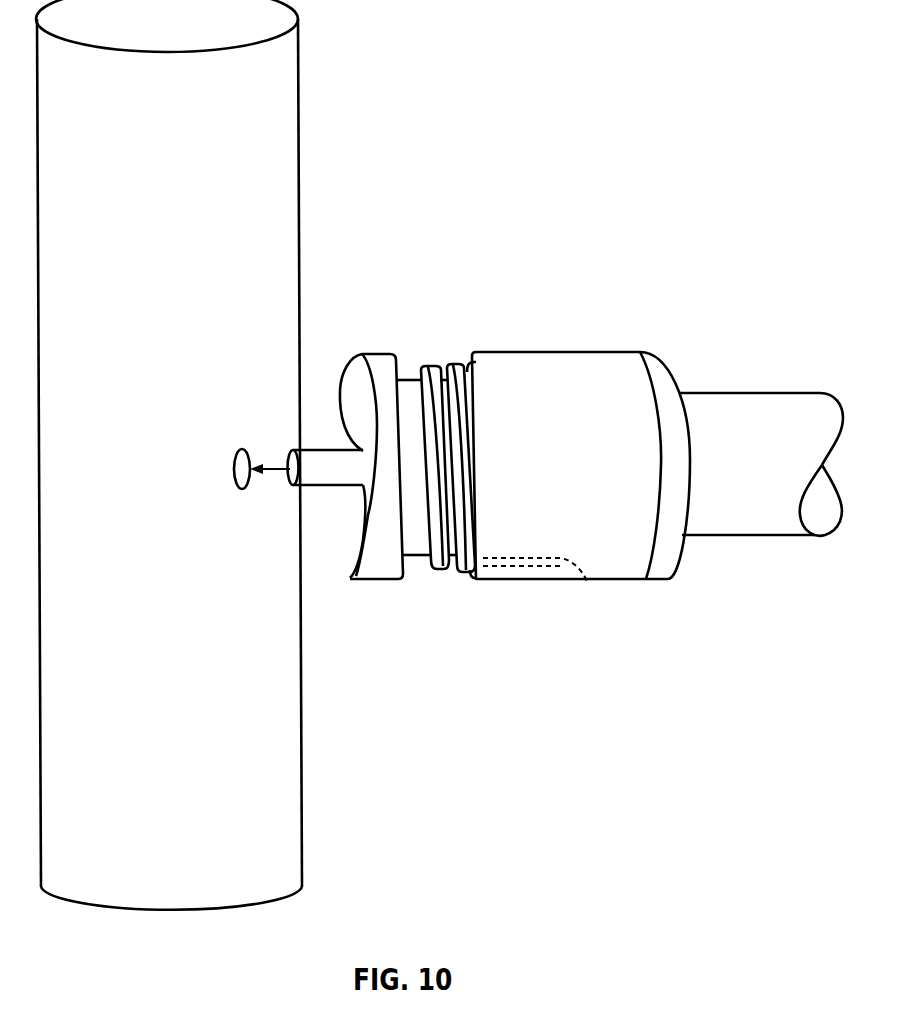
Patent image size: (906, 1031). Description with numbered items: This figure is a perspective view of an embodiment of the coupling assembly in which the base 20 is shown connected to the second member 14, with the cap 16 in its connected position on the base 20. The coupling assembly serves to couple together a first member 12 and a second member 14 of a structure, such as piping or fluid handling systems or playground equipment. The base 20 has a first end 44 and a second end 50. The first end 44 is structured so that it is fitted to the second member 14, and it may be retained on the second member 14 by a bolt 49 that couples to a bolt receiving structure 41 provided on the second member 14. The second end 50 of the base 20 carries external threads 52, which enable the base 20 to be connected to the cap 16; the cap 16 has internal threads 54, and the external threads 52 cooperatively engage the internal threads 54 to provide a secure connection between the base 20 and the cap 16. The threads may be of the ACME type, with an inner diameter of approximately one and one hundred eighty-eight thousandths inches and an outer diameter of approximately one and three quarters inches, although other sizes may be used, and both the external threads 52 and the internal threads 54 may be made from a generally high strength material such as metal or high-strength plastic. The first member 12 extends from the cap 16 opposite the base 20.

The first member 12 is at (737, 403).
The second member 14 is at (300, 192).
The cap 16 is at (595, 360).
The base 20 is at (417, 449).
The bolt receiving structure 41 is at (243, 449).
The first end 44 is at (377, 353).
The bolt 49 is at (303, 447).
The second end 50 is at (587, 582).
The external threads 52 is at (527, 580).
The internal threads 54 is at (457, 363).